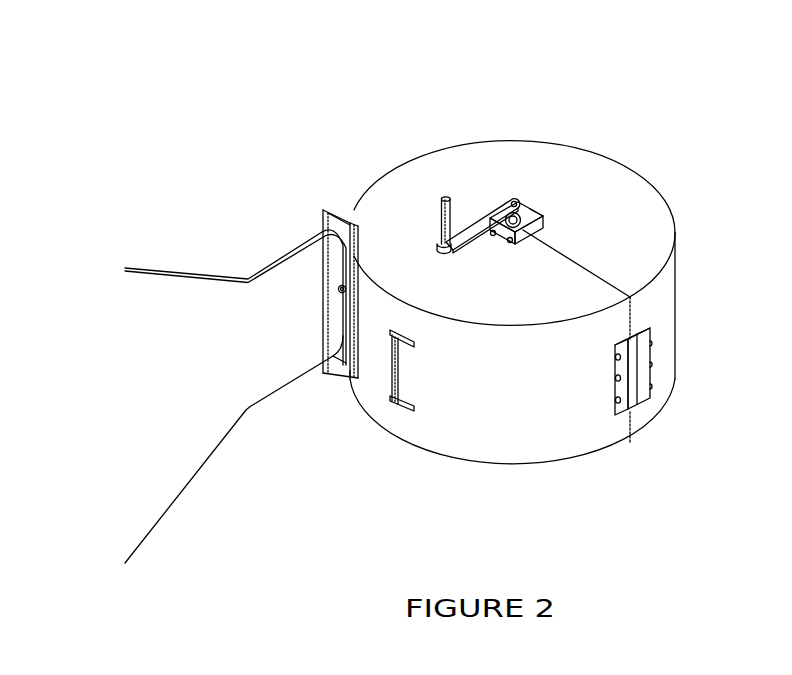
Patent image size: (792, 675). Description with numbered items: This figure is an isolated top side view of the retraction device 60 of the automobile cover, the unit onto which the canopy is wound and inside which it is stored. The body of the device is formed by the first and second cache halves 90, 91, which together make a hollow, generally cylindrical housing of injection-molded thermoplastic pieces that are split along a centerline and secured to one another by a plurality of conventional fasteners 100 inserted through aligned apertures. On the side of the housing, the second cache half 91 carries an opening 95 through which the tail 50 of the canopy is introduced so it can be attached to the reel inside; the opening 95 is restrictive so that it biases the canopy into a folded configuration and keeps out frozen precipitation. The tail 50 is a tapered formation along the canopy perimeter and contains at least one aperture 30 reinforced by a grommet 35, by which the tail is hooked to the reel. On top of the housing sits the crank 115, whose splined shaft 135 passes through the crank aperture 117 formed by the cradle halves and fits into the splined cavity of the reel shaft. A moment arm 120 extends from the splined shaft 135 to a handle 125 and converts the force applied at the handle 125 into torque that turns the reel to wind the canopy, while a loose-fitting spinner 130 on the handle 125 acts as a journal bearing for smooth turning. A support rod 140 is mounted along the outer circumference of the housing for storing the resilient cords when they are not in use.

The retraction device 60 is at (666, 67).
The crank 115 is at (458, 173).
The moment arm 120 is at (477, 222).
The handle 125 is at (473, 227).
The spinner 130 is at (440, 210).
The splined shaft 135 is at (521, 213).
The crank aperture 117 is at (540, 220).
The tail 50 is at (300, 265).
The aperture 30 is at (300, 243).
The grommet 35 is at (341, 286).
The first cache half 90 is at (673, 301).
The second cache half 91 is at (506, 447).
The opening 95 is at (338, 358).
The support rod 140 is at (392, 398).
The fasteners 100 is at (617, 378).